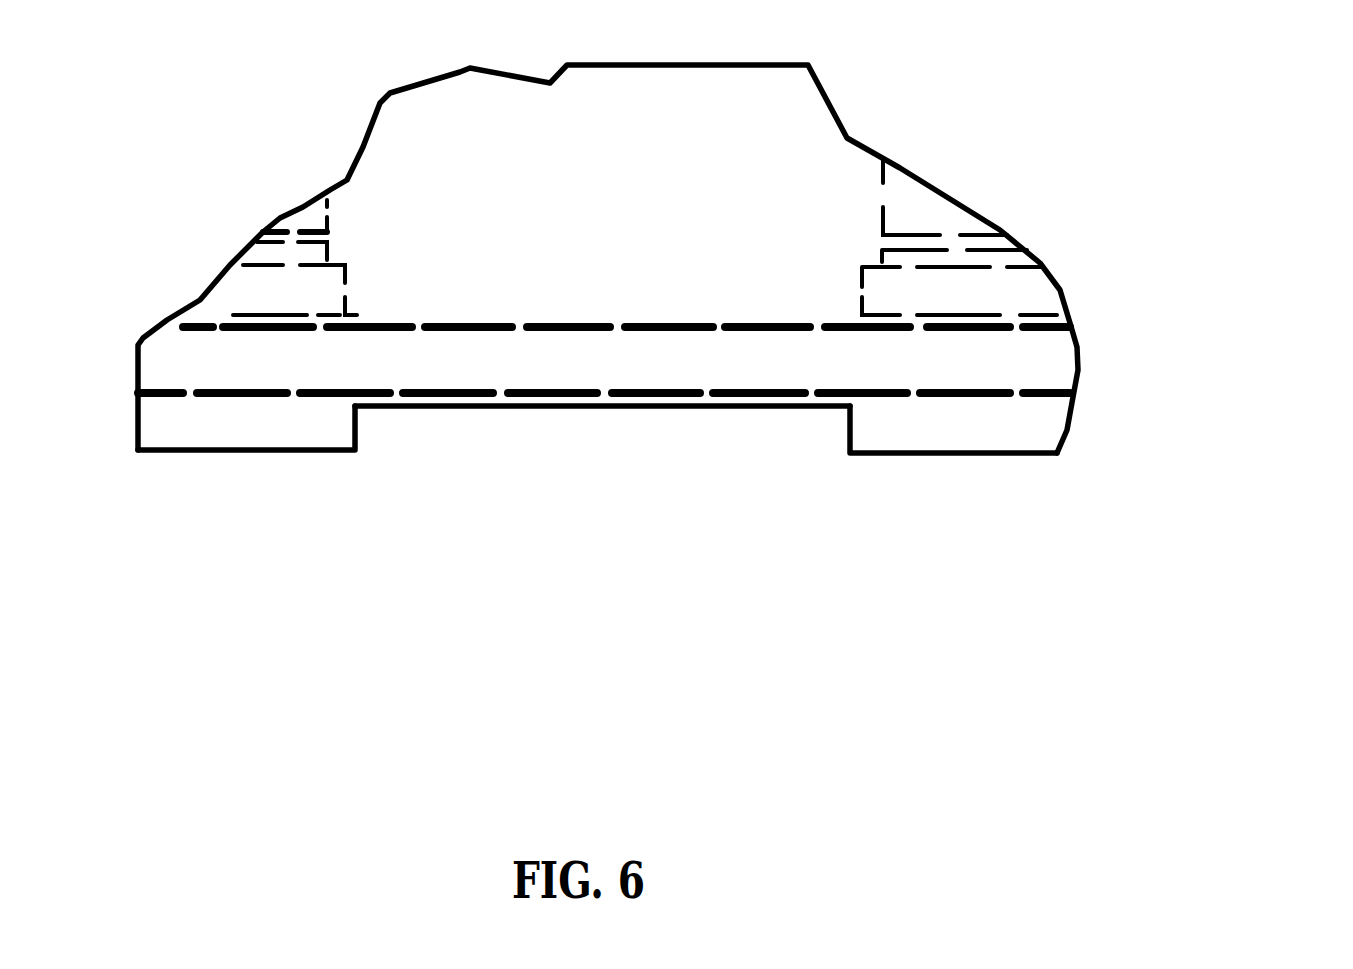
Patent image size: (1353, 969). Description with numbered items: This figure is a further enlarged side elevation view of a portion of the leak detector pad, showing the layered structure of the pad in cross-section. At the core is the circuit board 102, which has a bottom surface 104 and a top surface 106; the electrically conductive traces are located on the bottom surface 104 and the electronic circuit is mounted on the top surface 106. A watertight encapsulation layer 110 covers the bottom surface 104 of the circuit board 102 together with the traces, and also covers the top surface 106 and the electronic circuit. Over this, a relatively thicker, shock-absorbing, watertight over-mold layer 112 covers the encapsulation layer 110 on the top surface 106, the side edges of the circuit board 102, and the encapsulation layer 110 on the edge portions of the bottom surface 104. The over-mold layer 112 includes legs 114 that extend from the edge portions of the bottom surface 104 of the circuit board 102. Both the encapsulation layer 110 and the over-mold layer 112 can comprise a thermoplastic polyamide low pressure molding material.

The circuit board 102 is at (1023, 360).
The bottom surface 104 is at (728, 400).
The top surface 106 is at (750, 317).
The encapsulation layer 110 is at (625, 408).
The over-mold layer 112 is at (897, 440).
The legs 114 is at (267, 437).